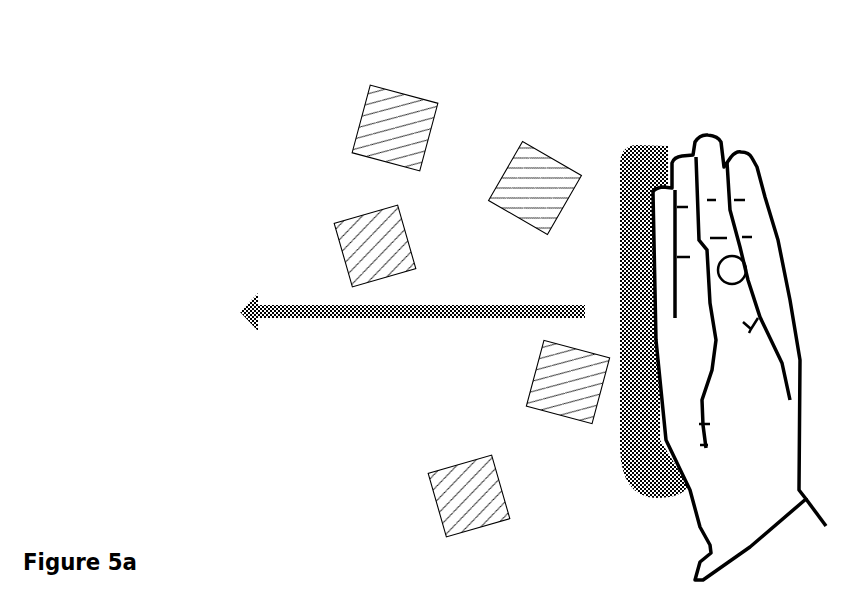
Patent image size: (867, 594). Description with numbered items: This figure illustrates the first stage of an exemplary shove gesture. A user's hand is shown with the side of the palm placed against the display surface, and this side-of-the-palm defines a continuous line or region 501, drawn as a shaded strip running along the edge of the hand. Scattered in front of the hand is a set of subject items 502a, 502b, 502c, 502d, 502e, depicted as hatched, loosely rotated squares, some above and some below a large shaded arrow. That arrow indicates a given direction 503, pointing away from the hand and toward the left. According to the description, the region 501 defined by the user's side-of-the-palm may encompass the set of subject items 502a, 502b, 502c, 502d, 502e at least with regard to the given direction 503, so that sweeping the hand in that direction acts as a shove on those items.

The continuous line or region 501 is at (638, 147).
The subject item 502a is at (363, 214).
The subject item 502b is at (420, 99).
The subject item 502c is at (560, 162).
The subject item 502d is at (536, 373).
The subject item 502e is at (435, 496).
The given direction 503 is at (368, 318).